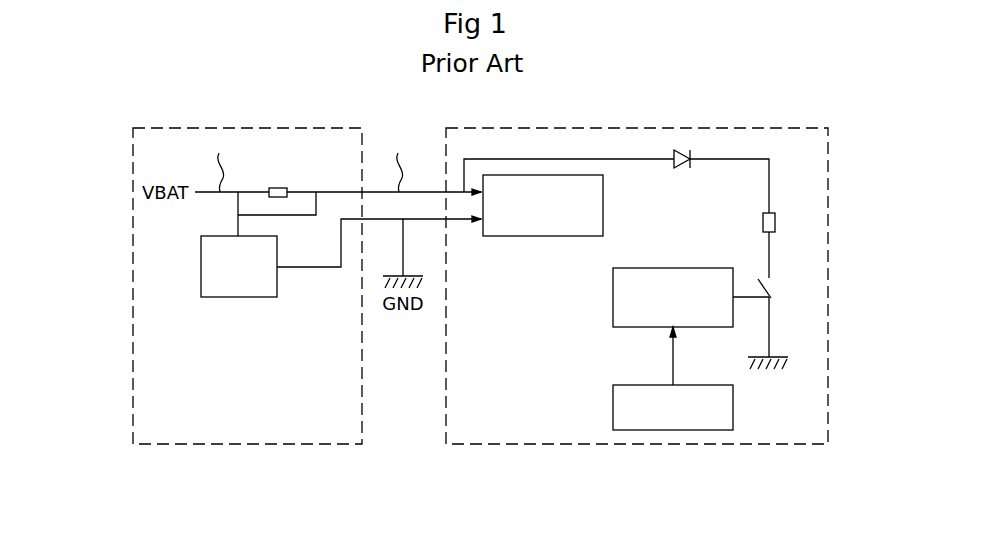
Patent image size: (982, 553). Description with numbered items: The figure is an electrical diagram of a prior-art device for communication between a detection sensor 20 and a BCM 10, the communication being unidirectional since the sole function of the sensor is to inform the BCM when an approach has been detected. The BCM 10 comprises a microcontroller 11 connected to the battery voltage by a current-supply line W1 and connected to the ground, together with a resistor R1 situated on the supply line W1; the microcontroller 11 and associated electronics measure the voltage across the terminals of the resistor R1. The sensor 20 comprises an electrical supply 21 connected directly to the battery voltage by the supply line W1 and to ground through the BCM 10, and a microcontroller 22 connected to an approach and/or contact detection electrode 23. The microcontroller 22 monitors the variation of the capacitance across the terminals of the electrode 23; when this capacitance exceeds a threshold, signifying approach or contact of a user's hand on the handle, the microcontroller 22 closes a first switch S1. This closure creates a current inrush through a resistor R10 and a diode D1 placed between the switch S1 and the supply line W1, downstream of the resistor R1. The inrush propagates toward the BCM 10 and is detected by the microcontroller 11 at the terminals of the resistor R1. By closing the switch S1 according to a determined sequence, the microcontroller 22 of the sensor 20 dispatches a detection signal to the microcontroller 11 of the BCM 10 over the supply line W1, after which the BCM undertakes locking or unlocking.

The BCM 10 is at (163, 473).
The microcontroller 11 is at (248, 467).
The detection sensor 20 is at (474, 482).
The electrical supply 21 is at (593, 495).
The microcontroller 22 is at (722, 497).
The approach and/or contact detection electrode 23 is at (667, 460).
The current-supply line W1 is at (313, 161).
The resistor R1 is at (277, 201).
The diode D1 is at (684, 174).
The resistor R10 is at (788, 222).
The first switch S1 is at (767, 290).